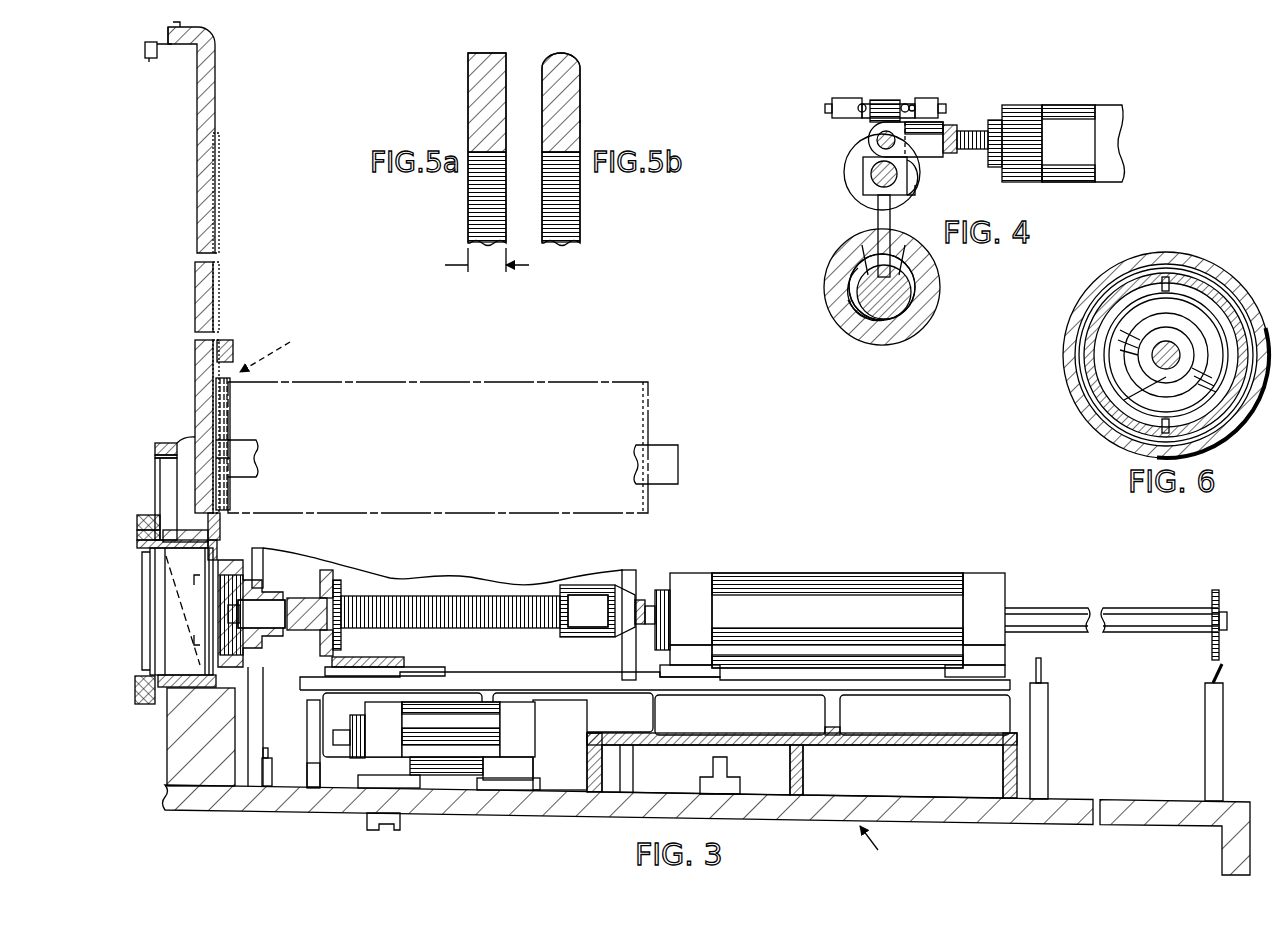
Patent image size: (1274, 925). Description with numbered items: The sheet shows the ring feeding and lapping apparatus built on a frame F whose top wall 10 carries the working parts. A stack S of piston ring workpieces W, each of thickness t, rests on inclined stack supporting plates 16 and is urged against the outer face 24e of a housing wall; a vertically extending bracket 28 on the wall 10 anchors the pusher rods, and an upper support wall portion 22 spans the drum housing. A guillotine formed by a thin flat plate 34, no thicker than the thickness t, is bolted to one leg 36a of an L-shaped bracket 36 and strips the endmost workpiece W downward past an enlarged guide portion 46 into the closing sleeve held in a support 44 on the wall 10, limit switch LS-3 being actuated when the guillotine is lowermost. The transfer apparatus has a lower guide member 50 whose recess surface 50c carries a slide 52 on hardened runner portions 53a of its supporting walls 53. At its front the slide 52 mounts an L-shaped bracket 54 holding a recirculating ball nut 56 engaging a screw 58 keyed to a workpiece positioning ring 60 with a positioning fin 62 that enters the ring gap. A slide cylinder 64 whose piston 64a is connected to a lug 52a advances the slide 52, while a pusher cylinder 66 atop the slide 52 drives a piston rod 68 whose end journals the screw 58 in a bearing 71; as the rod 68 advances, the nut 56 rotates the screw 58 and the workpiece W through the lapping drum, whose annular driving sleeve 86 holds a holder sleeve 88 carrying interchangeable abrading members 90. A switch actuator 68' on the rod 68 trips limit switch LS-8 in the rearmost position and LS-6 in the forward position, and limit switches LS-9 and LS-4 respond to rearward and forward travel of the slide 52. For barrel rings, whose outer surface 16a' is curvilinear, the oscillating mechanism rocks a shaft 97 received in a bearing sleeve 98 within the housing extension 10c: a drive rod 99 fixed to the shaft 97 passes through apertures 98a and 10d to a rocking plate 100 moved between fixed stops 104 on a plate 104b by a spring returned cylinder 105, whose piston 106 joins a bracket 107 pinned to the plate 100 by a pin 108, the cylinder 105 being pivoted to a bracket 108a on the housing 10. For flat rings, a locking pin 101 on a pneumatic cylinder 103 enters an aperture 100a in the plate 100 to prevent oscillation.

In FIG. 3, the top wall 10 is at (563, 817).
In FIG. 4, the housing extension 10c is at (936, 272).
In FIG. 4, the aperture 10d is at (868, 268).
In FIG. 3, the stack supporting plates 16 is at (262, 460).
In FIG. 5B, the outer surface 16a' is at (592, 141).
In FIG. 3, the upper support wall portion 22 is at (155, 450).
In FIG. 3, the outer face 24e is at (222, 408).
In FIG. 3, the bracket 28 is at (727, 766).
In FIG. 3, the plate 34 is at (215, 302).
In FIG. 3, the L-shaped bracket 36 is at (217, 42).
In FIG. 3, the leg 36a is at (210, 190).
In FIG. 3, the support 44 is at (195, 786).
In FIG. 3, the guide portion 46 is at (221, 530).
In FIG. 3, the lower guide member 50 is at (850, 743).
In FIG. 3, the surface 50c is at (690, 740).
In FIG. 3, the slide 52 is at (906, 690).
In FIG. 3, the lug 52a is at (333, 737).
In FIG. 3, the supporting walls 53 is at (662, 716).
In FIG. 3, the runner portions 53a is at (828, 726).
In FIG. 3, the L-shaped bracket 54 is at (404, 665).
In FIG. 3, the recirculating ball-type nut 56 is at (302, 598).
In FIG. 3, the screw 58 is at (452, 590).
In FIG. 6, the screw 58 is at (1096, 392).
In FIG. 3, the workpiece positioning ring 60 is at (252, 658).
In FIG. 6, the workpiece positioning ring 60 is at (1104, 348).
In FIG. 3, the positioning fin 62 is at (252, 548).
In FIG. 6, the positioning fin 62 is at (1212, 270).
In FIG. 3, the slide cylinder 64 is at (449, 746).
In FIG. 3, the piston 64a is at (343, 725).
In FIG. 3, the pusher cylinder 66 is at (832, 625).
In FIG. 3, the piston rod 68 is at (920, 613).
In FIG. 3, the switch actuator 68' is at (1207, 607).
In FIG. 3, the bearing 71 is at (586, 640).
In FIG. 3, the annular driving sleeve 86 is at (140, 515).
In FIG. 6, the annular driving sleeve 86 is at (1126, 270).
In FIG. 3, the holder sleeve 88 is at (137, 525).
In FIG. 6, the holder sleeve 88 is at (1165, 276).
In FIG. 3, the abrading members 90 is at (157, 542).
In FIG. 6, the abrading members 90 is at (1108, 276).
In FIG. 4, the shaft 97 is at (845, 300).
In FIG. 4, the bearing sleeve 98 is at (925, 300).
In FIG. 4, the aperture 98a is at (862, 252).
In FIG. 4, the drive rod 99 is at (890, 222).
In FIG. 4, the rocking plate 100 is at (871, 176).
In FIG. 4, the aperture 100a is at (905, 163).
In FIG. 4, the locking pin 101 is at (908, 190).
In FIG. 4, the pneumatic cylinder 103 is at (853, 185).
In FIG. 4, the fixed stops 104 is at (850, 98).
In FIG. 4, the plate 104b is at (882, 100).
In FIG. 4, the cylinder 105 is at (1063, 110).
In FIG. 4, the piston 106 is at (952, 125).
In FIG. 4, the bracket 107 is at (942, 150).
In FIG. 4, the pin 108 is at (877, 140).
In FIG. 3, the bracket 108a is at (400, 826).
In FIG. 3, the workpiece W is at (150, 578).
In FIG. 5A, the workpiece W is at (468, 112).
In FIG. 5B, the workpiece W is at (580, 112).
In FIG. 3, the stack S is at (265, 352).
In FIG. 5A, the thickness t is at (487, 262).
In FIG. 3, the frame F is at (883, 846).
In FIG. 3, the limit switch LS-3 is at (150, 62).
In FIG. 3, the limit switch LS-4 is at (266, 786).
In FIG. 3, the limit switch LS-6 is at (1048, 702).
In FIG. 3, the limit switch LS-8 is at (1205, 694).
In FIG. 3, the limit switch LS-9 is at (312, 787).